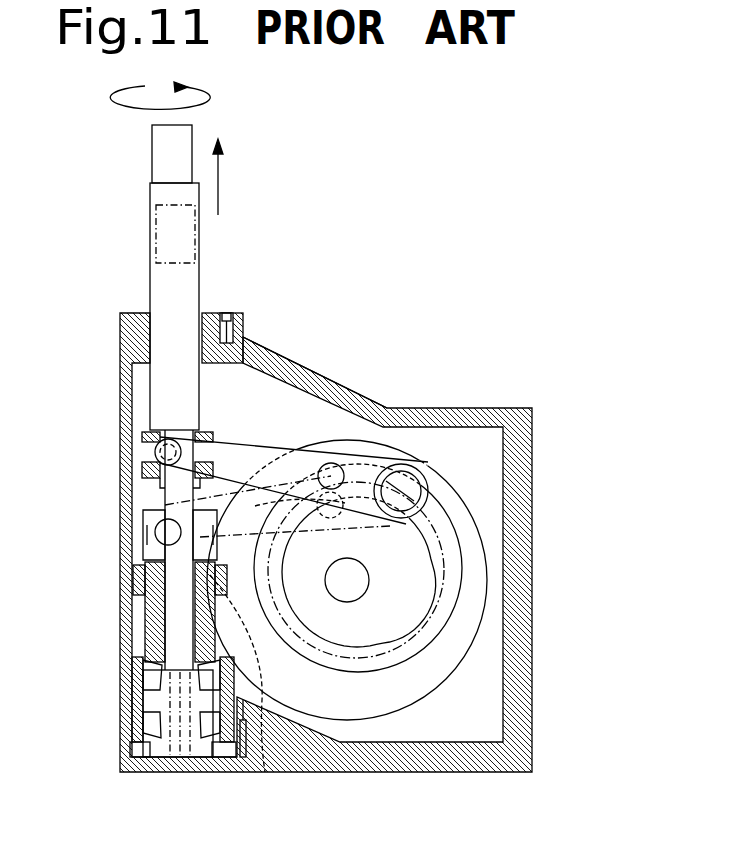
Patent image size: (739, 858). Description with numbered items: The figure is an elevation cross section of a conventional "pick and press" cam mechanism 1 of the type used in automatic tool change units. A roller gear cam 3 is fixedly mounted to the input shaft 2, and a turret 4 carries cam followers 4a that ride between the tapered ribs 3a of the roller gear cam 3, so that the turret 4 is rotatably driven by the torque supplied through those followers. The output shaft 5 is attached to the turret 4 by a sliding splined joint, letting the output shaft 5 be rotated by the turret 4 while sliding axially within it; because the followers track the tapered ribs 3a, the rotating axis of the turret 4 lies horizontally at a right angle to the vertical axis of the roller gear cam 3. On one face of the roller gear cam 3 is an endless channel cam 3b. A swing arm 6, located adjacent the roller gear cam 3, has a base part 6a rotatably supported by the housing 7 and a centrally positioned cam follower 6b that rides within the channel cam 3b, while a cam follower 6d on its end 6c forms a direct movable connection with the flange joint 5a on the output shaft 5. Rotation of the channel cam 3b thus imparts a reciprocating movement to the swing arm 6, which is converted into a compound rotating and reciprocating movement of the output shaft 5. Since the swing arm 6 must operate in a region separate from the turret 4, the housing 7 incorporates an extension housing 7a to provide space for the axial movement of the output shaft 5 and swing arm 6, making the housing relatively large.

The rotary/linear actuator (prior art) 1 is at (453, 250).
The input shaft 2 is at (217, 541).
The roller gear cam 3 is at (475, 578).
The tapered ribs 3a is at (477, 637).
The endless channel cam 3b is at (363, 665).
The turret 4 is at (153, 628).
The cam followers 4a is at (143, 585).
The output shaft 5 is at (160, 287).
The flange joint 5a is at (148, 461).
The swing arm 6 is at (270, 446).
The base part 6a is at (427, 474).
The cam follower 6b is at (331, 463).
The end 6c is at (170, 440).
The cam follower 6d is at (150, 452).
The housing 7 is at (447, 408).
The extension housing 7a is at (262, 340).